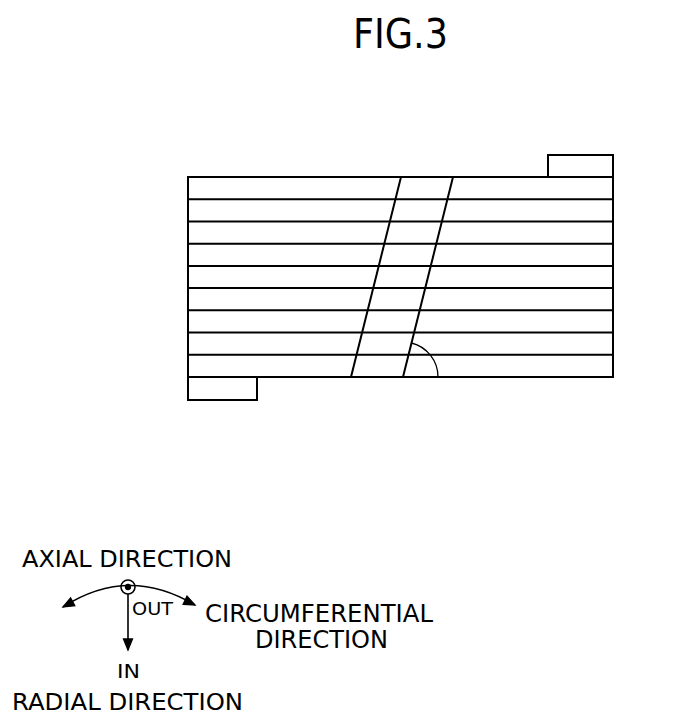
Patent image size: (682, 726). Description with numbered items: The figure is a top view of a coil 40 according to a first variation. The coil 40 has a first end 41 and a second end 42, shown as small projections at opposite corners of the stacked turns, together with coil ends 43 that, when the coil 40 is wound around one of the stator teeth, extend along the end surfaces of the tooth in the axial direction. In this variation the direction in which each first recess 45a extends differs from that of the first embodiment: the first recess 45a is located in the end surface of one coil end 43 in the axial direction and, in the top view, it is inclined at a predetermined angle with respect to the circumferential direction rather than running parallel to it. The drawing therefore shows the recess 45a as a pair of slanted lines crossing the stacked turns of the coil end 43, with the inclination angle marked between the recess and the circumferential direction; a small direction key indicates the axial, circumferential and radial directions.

The coil 40 is at (386, 256).
The first end 41 is at (225, 390).
The second end 42 is at (577, 168).
The coil end 43 is at (313, 172).
The first recess 45a is at (428, 177).